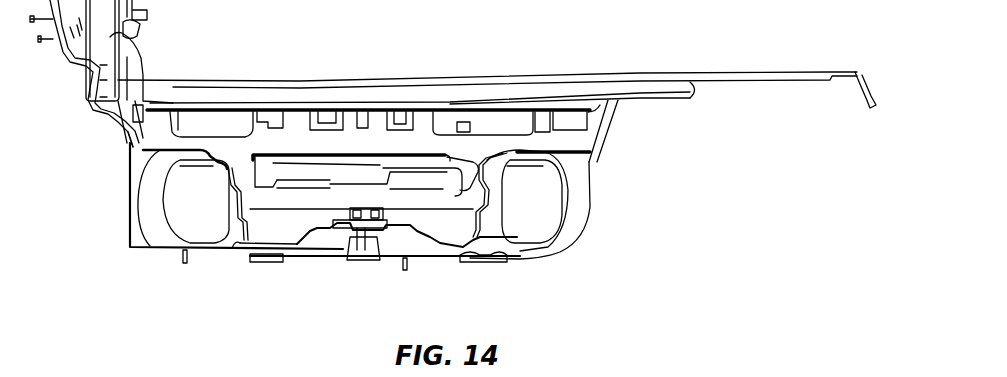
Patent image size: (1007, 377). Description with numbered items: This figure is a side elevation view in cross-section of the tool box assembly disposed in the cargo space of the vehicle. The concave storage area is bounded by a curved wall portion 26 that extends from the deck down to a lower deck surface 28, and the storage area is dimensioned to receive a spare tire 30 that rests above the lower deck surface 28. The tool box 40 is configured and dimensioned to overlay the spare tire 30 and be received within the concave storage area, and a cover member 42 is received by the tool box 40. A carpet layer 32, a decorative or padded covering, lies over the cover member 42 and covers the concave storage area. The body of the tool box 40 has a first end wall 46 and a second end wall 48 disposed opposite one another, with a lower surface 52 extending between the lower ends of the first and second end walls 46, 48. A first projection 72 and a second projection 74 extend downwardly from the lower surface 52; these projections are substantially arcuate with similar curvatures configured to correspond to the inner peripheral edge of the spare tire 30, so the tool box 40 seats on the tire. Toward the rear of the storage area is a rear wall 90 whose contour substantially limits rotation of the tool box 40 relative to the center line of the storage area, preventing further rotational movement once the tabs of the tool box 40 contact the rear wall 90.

The curved wall portion 26 is at (580, 197).
The lower deck surface 28 is at (240, 247).
The spare tire 30 is at (548, 250).
The carpet layer 32 is at (743, 72).
The tool box 40 is at (577, 157).
The cover member 42 is at (450, 102).
The first end wall 46 is at (133, 148).
The second end wall 48 is at (604, 128).
The lower surface 52 is at (158, 152).
The first projection 72 is at (264, 180).
The second projection 74 is at (457, 183).
The rear wall 90 is at (140, 63).